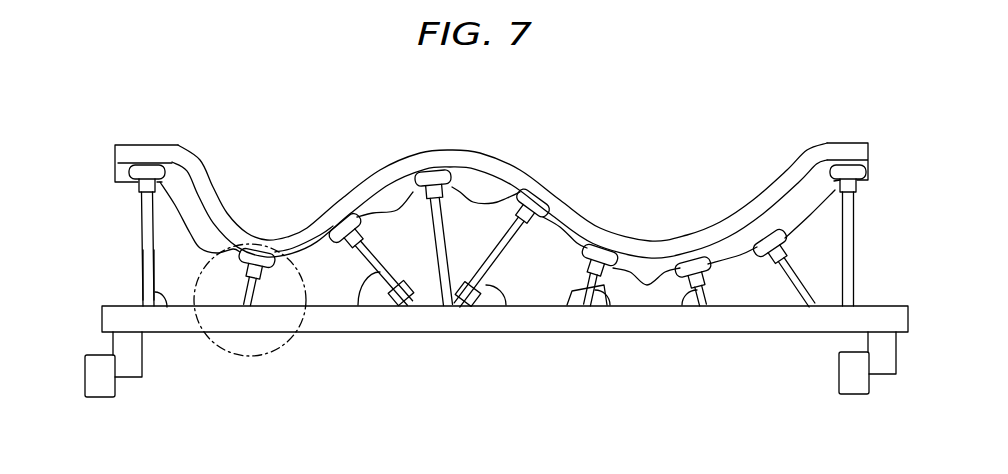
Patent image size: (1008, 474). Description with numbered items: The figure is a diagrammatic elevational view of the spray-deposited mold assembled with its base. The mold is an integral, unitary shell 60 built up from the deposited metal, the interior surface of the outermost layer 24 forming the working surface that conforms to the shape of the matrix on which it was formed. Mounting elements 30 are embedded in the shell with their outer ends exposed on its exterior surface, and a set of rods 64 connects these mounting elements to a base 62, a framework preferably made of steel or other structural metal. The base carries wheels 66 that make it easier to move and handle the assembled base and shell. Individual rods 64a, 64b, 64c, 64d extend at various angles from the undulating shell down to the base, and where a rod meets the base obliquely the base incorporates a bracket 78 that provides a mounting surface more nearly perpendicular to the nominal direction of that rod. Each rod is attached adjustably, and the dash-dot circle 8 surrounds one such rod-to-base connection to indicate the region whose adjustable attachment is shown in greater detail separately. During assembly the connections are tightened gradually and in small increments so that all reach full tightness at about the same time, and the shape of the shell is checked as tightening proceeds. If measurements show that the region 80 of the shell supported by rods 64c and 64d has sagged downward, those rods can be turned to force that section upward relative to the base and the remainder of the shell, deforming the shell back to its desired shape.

The layer 24 is at (424, 148).
The region of the shell 80 is at (633, 233).
The shell 60 is at (114, 156).
The mounting elements 30 is at (136, 190).
The base 62 is at (103, 323).
The wheels 66 is at (100, 398).
The rods 64 is at (153, 292).
The detail circle 8 is at (255, 357).
The core pin 64a is at (363, 290).
The core pin 64b is at (500, 292).
The rod 64c is at (604, 295).
The rod 64d is at (690, 298).
The bracket 78 is at (407, 295).